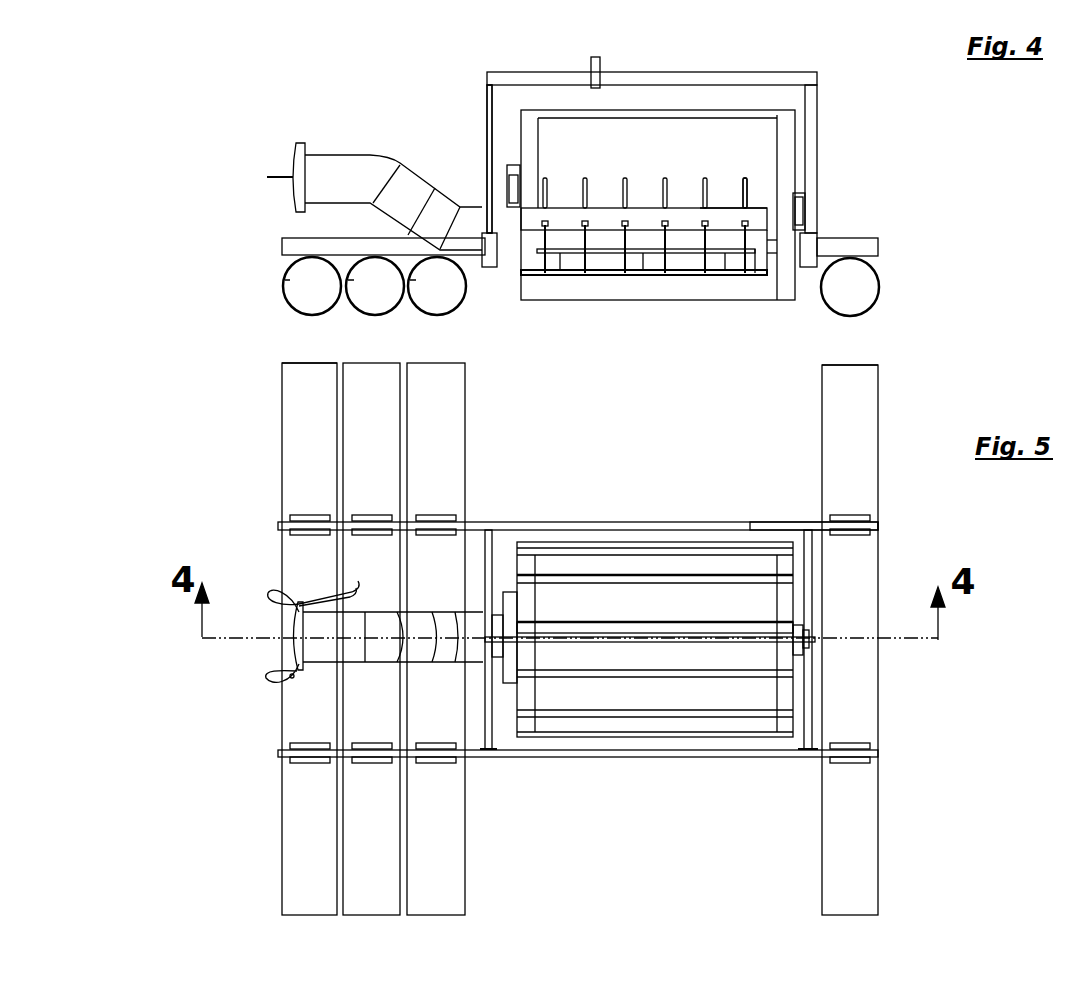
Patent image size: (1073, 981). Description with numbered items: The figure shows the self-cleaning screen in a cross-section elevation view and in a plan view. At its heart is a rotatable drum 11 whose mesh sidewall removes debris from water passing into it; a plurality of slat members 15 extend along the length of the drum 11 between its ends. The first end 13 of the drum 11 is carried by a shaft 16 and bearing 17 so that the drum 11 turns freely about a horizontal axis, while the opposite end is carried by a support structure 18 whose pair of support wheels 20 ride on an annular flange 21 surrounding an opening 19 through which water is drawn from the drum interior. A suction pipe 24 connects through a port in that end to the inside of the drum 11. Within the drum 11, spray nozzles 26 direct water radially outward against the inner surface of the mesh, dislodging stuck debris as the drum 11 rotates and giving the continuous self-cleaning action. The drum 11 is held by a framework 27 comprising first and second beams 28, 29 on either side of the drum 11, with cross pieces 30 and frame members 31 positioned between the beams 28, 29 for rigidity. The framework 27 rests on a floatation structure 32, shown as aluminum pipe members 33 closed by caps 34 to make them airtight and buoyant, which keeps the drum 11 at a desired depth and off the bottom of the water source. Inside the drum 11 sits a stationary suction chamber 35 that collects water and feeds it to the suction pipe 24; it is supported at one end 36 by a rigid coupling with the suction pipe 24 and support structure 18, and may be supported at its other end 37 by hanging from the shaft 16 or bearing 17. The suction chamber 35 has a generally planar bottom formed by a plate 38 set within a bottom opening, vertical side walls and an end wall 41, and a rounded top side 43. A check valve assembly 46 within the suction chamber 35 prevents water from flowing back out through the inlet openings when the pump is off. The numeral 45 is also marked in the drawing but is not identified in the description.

In FIG. 4, the rotatable drum 11 is at (785, 140).
In FIG. 5, the rotatable drum 11 is at (588, 545).
In FIG. 4, the first end of the drum 13 is at (795, 158).
In FIG. 5, the slat members 15 is at (648, 583).
In FIG. 4, the shaft 16 is at (800, 211).
In FIG. 4, the bearing 17 is at (797, 196).
In FIG. 4, the support structure 18 is at (518, 166).
In FIG. 5, the support structure 18 is at (510, 678).
In FIG. 4, the opening 19 is at (520, 238).
In FIG. 4, the support wheels 20 is at (509, 183).
In FIG. 4, the annular flange 21 is at (512, 165).
In FIG. 5, the annular flange 21 is at (507, 593).
In FIG. 4, the suction pipe 24 is at (328, 167).
In FIG. 5, the suction pipe 24 is at (322, 655).
In FIG. 4, the spray nozzles 26 is at (632, 186).
In FIG. 5, the framework 27 is at (758, 520).
In FIG. 5, the first beam 28 is at (690, 520).
In FIG. 5, the second beam 29 is at (683, 752).
In FIG. 5, the cross pieces 30 is at (472, 522).
In FIG. 4, the frame members 31 is at (817, 102).
In FIG. 5, the frame members 31 is at (815, 652).
In FIG. 4, the floatation structure 32 is at (288, 284).
In FIG. 5, the floatation structure 32 is at (296, 400).
In FIG. 4, the pipe members 33 is at (362, 312).
In FIG. 5, the pipe members 33 is at (868, 405).
In FIG. 4, the caps 34 is at (298, 266).
In FIG. 5, the caps 34 is at (862, 365).
In FIG. 4, the suction chamber 35 is at (762, 243).
In FIG. 4, the one end of the suction chamber 36 is at (523, 238).
In FIG. 4, the other end of the suction chamber 37 is at (773, 258).
In FIG. 4, the plate 38 is at (615, 275).
In FIG. 4, the end wall 41 is at (768, 253).
In FIG. 4, the rounded top side 43 is at (717, 208).
In FIG. 4, the top plate 45 is at (525, 218).
In FIG. 4, the check valve assembly 46 is at (673, 262).